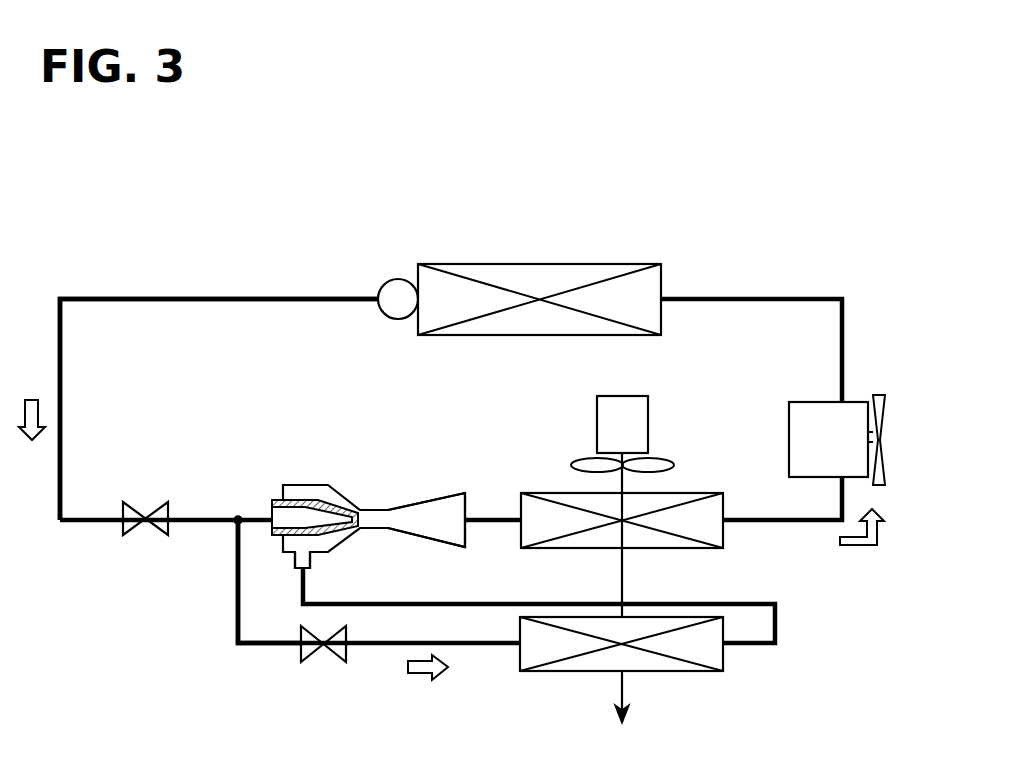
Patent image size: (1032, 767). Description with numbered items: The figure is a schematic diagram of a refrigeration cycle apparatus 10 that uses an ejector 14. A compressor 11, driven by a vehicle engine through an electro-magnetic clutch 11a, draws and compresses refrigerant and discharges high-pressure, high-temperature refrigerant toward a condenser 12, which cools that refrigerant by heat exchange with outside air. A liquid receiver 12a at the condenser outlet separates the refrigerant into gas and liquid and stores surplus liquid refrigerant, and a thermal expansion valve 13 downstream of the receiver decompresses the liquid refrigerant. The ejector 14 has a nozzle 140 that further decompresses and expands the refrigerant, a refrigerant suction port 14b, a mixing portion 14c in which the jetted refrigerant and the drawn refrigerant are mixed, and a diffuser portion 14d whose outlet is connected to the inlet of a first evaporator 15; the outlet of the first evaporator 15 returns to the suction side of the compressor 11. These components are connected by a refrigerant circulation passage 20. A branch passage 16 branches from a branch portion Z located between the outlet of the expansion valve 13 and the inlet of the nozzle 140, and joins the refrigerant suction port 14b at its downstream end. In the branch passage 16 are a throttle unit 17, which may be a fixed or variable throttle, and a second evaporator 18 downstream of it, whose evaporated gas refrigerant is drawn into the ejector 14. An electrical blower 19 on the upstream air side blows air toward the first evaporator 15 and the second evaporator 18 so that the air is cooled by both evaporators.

The refrigeration cycle apparatus 10 is at (806, 186).
The refrigerant circulation passage 20 is at (210, 297).
The condenser 12 is at (588, 264).
The liquid receiver 12a is at (392, 283).
The compressor 11 is at (852, 401).
The electro-magnetic clutch 11a is at (886, 416).
The electrical blower 19 is at (670, 462).
The first evaporator 15 is at (725, 540).
The second evaporator 18 is at (725, 664).
The ejector 14 is at (395, 506).
The nozzle 140 is at (325, 490).
The refrigerant suction port 14b is at (310, 560).
The mixing portion 14c is at (375, 520).
The diffuser portion 14d is at (452, 538).
The thermal expansion valve 13 is at (133, 524).
The branch portion Z is at (226, 521).
The branch passage 16 is at (234, 630).
The throttle unit 17 is at (315, 650).